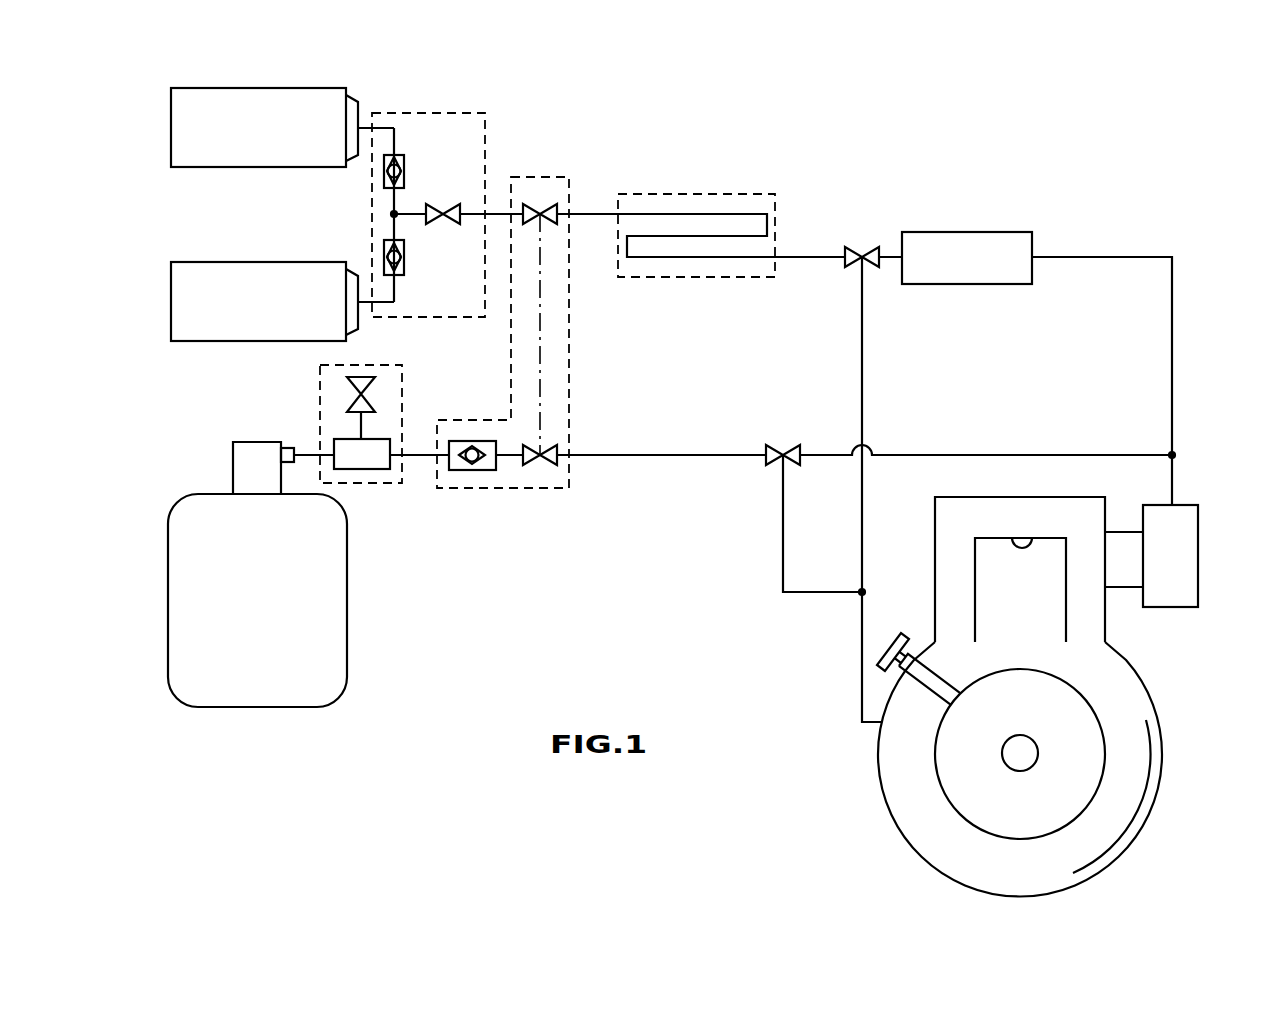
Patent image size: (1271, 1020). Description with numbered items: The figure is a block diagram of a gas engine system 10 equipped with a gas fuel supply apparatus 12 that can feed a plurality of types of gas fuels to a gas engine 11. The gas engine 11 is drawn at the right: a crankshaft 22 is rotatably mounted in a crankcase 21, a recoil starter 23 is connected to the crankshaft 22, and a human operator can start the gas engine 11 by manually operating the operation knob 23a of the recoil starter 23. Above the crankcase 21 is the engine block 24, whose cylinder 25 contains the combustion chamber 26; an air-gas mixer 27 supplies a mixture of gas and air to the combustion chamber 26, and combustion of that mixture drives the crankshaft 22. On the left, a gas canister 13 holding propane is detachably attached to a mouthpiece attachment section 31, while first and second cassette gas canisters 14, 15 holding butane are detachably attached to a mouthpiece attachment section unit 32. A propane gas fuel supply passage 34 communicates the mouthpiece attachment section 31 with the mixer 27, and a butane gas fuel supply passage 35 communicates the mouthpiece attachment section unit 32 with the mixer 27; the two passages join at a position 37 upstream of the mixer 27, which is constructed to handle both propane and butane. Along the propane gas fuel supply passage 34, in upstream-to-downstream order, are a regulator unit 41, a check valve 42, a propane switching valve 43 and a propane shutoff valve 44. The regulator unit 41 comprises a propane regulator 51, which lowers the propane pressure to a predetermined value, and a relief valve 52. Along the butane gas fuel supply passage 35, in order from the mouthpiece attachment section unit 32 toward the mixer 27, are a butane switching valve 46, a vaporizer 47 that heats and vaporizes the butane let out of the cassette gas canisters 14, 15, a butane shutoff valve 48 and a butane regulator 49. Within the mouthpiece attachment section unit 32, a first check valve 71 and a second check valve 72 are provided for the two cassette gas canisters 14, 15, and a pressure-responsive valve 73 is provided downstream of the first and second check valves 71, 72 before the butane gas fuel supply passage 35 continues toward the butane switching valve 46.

The gas engine system 10 is at (868, 143).
The gas engine 11 is at (1020, 678).
The gas fuel supply apparatus 12 is at (1085, 240).
The gas canister 13 is at (168, 597).
The first cassette gas canister 14 is at (171, 128).
The second cassette gas canister 15 is at (171, 302).
The crankcase 21 is at (1115, 807).
The crankshaft 22 is at (1020, 763).
The recoil starter 23 is at (948, 803).
The operation knob 23a is at (884, 650).
The engine block 24 is at (877, 775).
The cylinder 25 is at (935, 524).
The combustion chamber 26 is at (1031, 548).
The air-gas mixer 27 is at (1190, 553).
The mouthpiece attachment section 31 is at (289, 465).
The mouthpiece attachment section unit 32 is at (456, 195).
The propane gas fuel supply passage 34 is at (645, 483).
The butane gas fuel supply passage 35 is at (696, 181).
The joining position 37 is at (1175, 455).
The regulator unit 41 is at (294, 416).
The check valve 42 is at (480, 475).
The propane switching valve 43 is at (533, 465).
The propane shutoff valve 44 is at (773, 463).
The butane switching valve 46 is at (540, 208).
The vaporizer 47 is at (712, 194).
The butane shutoff valve 48 is at (853, 250).
The butane regulator 49 is at (963, 245).
The propane regulator 51 is at (336, 447).
The relief valve 52 is at (352, 383).
The first check valve 71 is at (404, 168).
The second check valve 72 is at (404, 270).
The pressure-responsive valve 73 is at (448, 208).